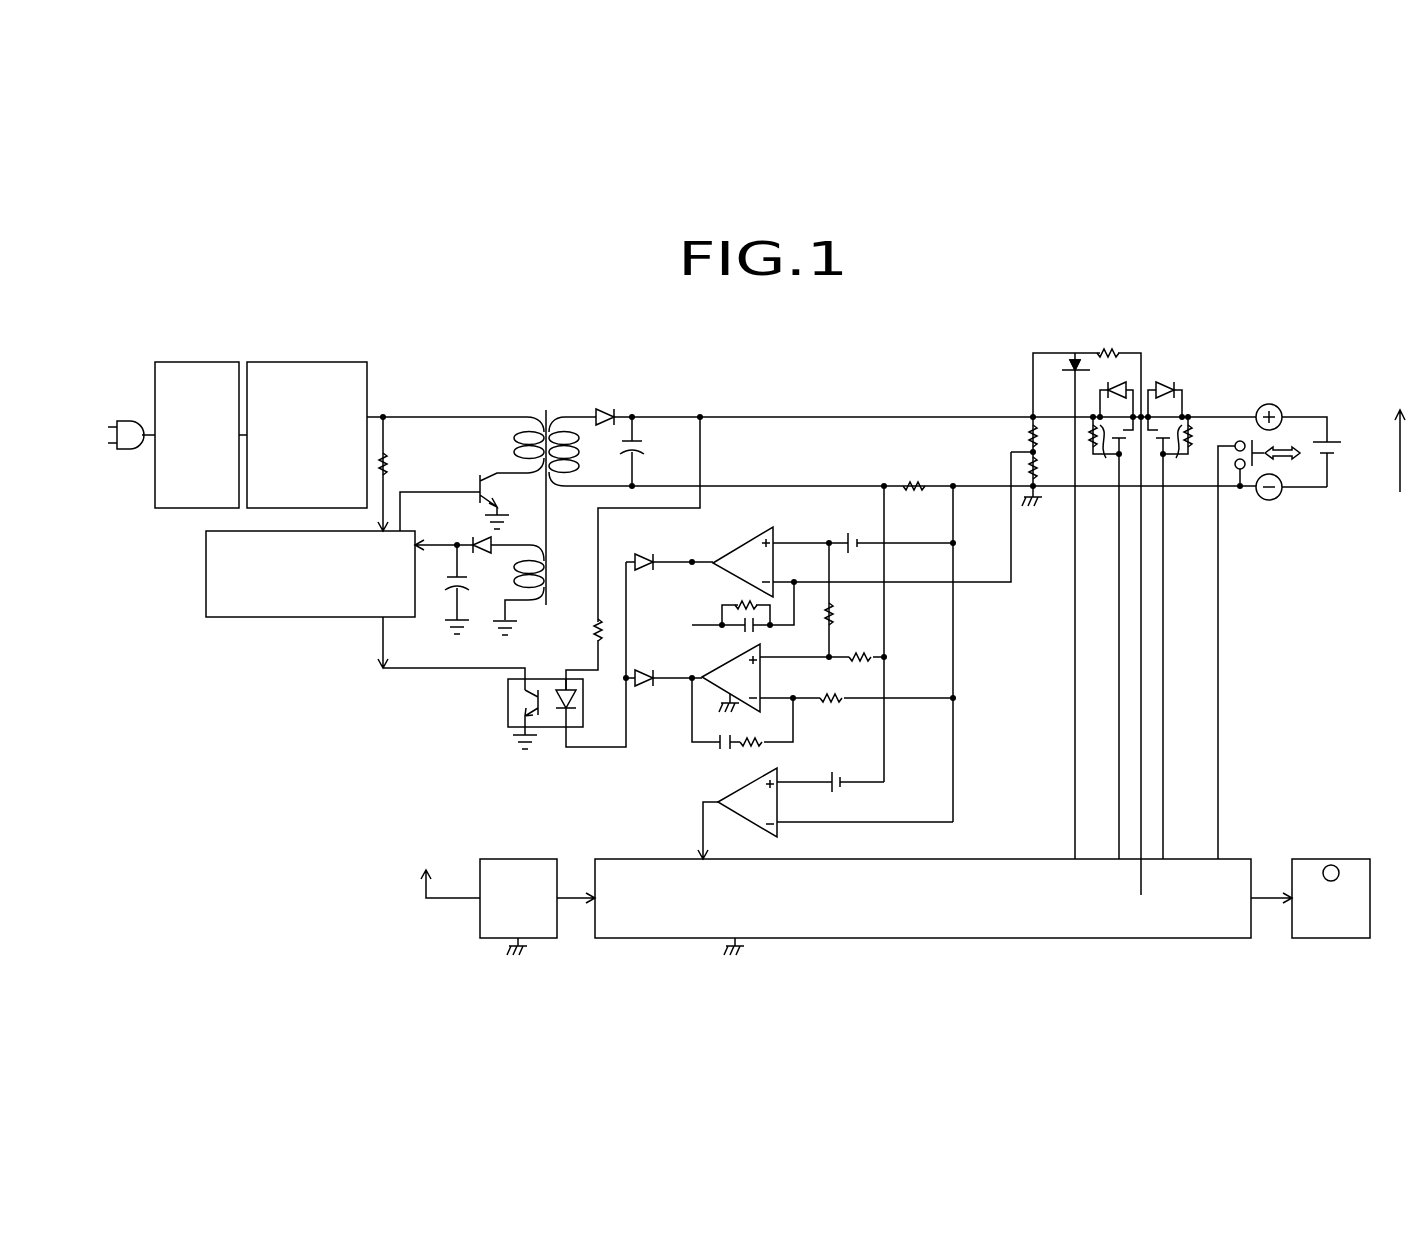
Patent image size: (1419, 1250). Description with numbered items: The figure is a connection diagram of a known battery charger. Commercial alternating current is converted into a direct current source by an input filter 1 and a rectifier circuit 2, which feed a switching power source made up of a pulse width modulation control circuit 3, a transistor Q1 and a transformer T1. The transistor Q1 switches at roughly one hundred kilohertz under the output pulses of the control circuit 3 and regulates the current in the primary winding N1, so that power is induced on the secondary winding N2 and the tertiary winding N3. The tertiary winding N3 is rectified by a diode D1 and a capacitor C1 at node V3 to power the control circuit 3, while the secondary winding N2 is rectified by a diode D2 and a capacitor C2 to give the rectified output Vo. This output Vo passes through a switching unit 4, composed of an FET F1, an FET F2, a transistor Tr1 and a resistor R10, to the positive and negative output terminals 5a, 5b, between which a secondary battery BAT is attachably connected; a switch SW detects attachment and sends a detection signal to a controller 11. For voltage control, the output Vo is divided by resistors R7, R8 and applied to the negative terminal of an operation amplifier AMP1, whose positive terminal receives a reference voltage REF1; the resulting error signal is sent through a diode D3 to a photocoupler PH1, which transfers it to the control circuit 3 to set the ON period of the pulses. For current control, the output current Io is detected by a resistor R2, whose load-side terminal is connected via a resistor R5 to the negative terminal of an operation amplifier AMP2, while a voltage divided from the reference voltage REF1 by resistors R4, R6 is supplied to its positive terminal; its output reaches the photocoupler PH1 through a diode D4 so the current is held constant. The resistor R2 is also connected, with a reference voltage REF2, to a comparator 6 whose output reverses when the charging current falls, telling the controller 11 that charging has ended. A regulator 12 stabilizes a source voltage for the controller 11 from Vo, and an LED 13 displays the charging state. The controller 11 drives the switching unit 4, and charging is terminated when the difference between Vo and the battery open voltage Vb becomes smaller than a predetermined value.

The input filter 1 is at (208, 362).
The rectifier circuit 2 is at (312, 362).
The pulse width modulation control circuit 3 is at (322, 617).
The switching unit 4 is at (1247, 327).
The output terminal 5a is at (1269, 404).
The output terminal 5b is at (1268, 501).
The comparator 6 is at (734, 790).
The controller 11 is at (621, 859).
The regulator 12 is at (518, 859).
The LED 13 is at (1331, 859).
The transformer T1 is at (549, 496).
The primary winding N1 is at (525, 410).
The secondary winding N2 is at (571, 410).
The tertiary winding N3 is at (513, 543).
The transistor Q1 is at (478, 480).
The diode D1 is at (480, 554).
The diode D2 is at (613, 412).
The diode D3 is at (638, 555).
The diode D4 is at (638, 670).
The capacitor C1 is at (470, 585).
The capacitor C2 is at (645, 447).
The voltage V3 node V3 is at (444, 532).
The photocoupler PH1 is at (508, 708).
The operation amplifier AMP1 is at (743, 562).
The operation amplifier AMP2 is at (731, 678).
The reference voltage REF1 is at (853, 530).
The reference voltage REF2 is at (840, 792).
The resistor R2 is at (915, 495).
The resistor R4 is at (836, 614).
The resistor R5 is at (832, 707).
The resistor R6 is at (856, 658).
The resistor R7 is at (1027, 438).
The resistor R8 is at (1046, 473).
The resistor R10 is at (1114, 353).
The transistor Tr1 is at (1073, 353).
The FET F1 is at (1120, 447).
The FET F2 is at (1166, 451).
The switch SW is at (1238, 472).
The secondary battery BAT is at (1341, 447).
The rectified output Vo is at (700, 417).
The output current Io is at (852, 406).
The open voltage of the secondary battery Vb is at (1400, 492).